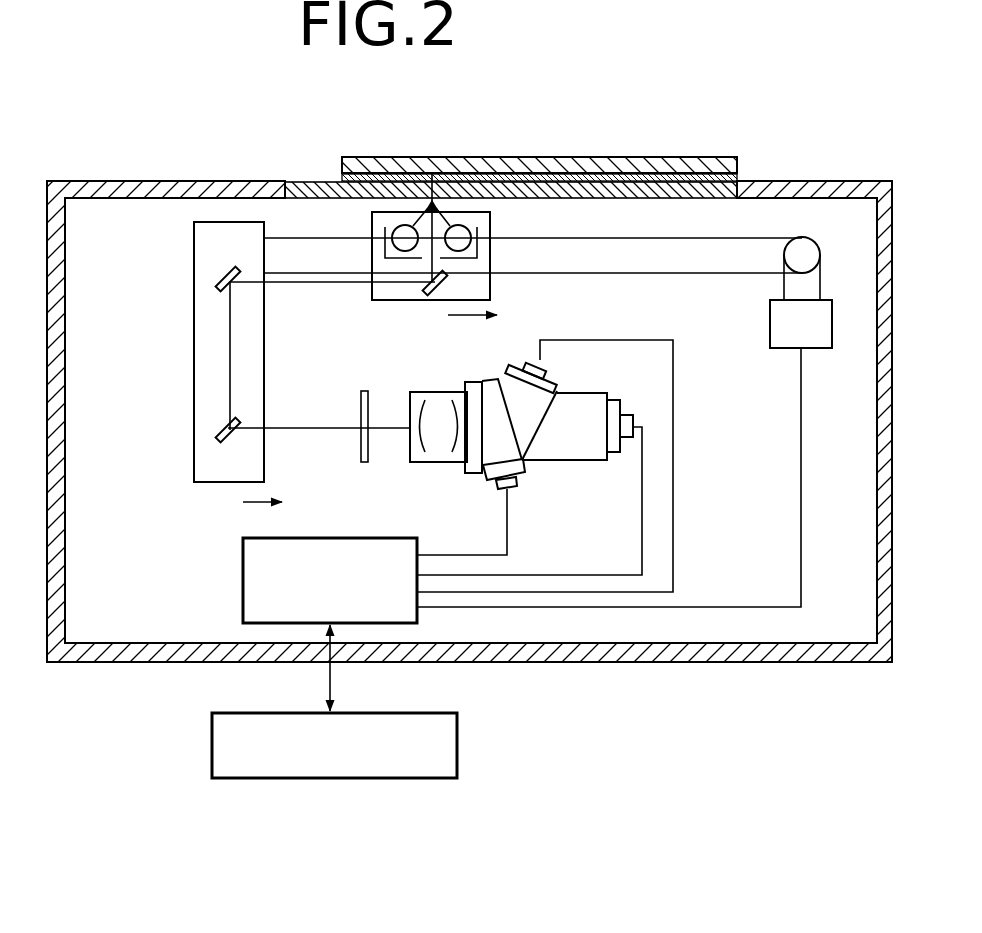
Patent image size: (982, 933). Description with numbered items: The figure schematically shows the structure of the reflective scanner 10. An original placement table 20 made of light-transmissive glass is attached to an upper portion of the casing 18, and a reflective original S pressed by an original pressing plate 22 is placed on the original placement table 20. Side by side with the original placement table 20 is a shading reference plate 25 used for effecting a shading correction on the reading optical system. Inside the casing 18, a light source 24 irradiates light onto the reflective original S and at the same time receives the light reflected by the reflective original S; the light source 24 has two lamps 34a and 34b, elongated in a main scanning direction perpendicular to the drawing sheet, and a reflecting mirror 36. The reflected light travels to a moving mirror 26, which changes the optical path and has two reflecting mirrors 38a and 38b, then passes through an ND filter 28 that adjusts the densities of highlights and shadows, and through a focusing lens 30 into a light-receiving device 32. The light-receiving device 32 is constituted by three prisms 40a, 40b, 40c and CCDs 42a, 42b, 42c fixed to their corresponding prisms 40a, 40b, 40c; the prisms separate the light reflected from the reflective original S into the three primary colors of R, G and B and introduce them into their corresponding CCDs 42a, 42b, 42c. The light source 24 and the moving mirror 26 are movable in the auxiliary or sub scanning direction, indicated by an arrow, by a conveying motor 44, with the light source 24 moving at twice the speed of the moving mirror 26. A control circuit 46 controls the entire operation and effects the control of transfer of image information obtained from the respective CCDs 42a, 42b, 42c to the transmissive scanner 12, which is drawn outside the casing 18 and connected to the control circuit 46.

The reflective scanner 10 is at (469, 389).
The transmissive scanner 12 is at (210, 738).
The casing 18 is at (782, 656).
The original placement table 20 is at (677, 190).
The original pressing plate 22 is at (582, 158).
The reflective original S is at (521, 158).
The light source 24 is at (439, 253).
The shading reference plate 25 is at (297, 180).
The moving mirror 26 is at (274, 362).
The ND filter 28 is at (362, 455).
The focusing lens 30 is at (437, 460).
The light-receiving device 32 is at (501, 449).
The lamp 34a is at (397, 232).
The lamp 34b is at (466, 233).
The reflecting mirror 36 is at (445, 285).
The reflecting mirror 38a is at (222, 272).
The reflecting mirror 38b is at (222, 424).
The prism 40a is at (478, 384).
The prism 40b is at (548, 390).
The prism 40c is at (566, 455).
The CCD 42a is at (500, 487).
The CCD 42b is at (527, 366).
The CCD 42c is at (628, 440).
The conveying motor 44 is at (783, 322).
The control circuit 46 is at (242, 552).